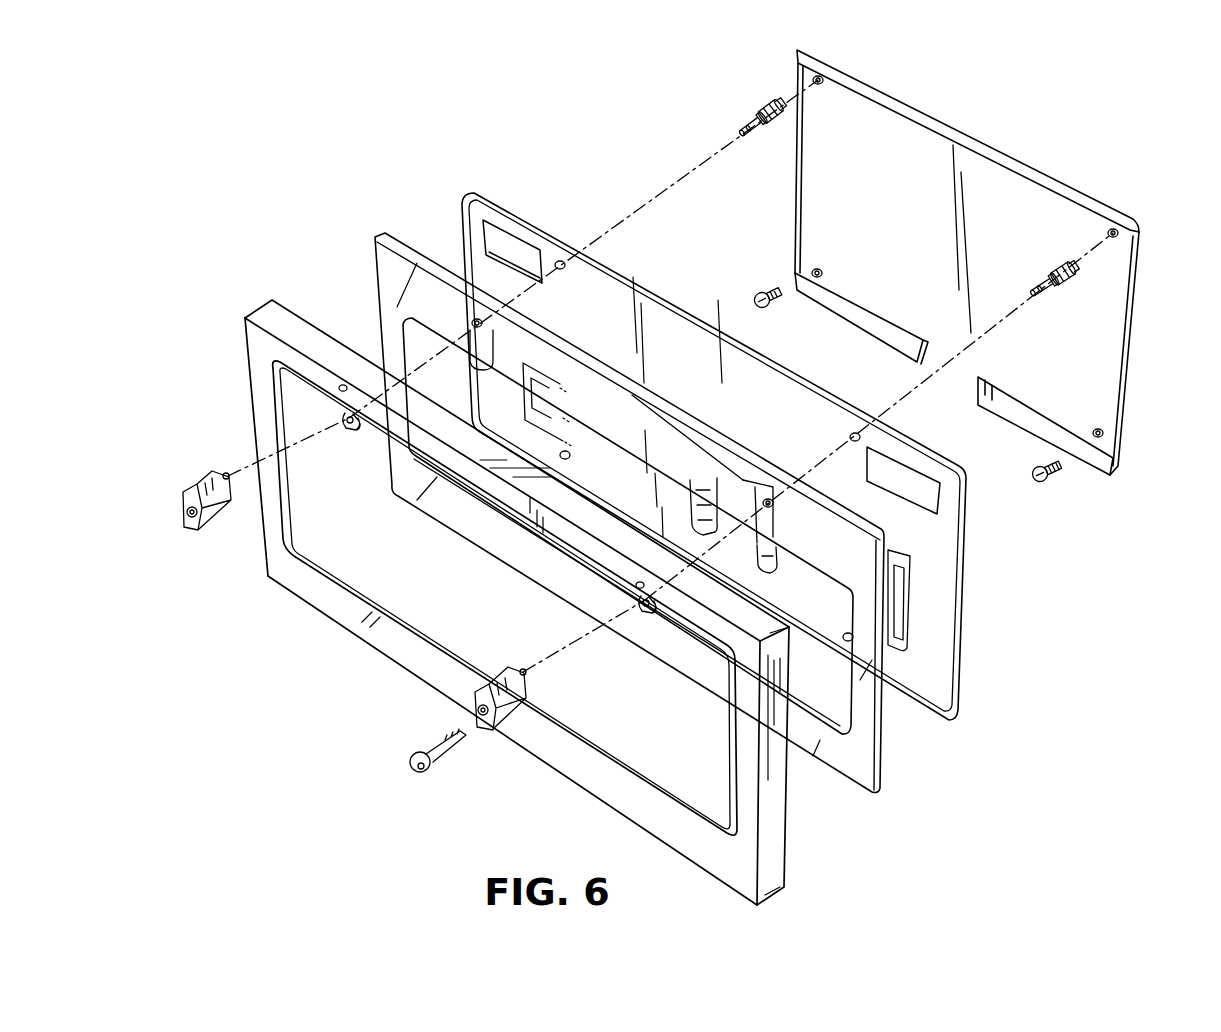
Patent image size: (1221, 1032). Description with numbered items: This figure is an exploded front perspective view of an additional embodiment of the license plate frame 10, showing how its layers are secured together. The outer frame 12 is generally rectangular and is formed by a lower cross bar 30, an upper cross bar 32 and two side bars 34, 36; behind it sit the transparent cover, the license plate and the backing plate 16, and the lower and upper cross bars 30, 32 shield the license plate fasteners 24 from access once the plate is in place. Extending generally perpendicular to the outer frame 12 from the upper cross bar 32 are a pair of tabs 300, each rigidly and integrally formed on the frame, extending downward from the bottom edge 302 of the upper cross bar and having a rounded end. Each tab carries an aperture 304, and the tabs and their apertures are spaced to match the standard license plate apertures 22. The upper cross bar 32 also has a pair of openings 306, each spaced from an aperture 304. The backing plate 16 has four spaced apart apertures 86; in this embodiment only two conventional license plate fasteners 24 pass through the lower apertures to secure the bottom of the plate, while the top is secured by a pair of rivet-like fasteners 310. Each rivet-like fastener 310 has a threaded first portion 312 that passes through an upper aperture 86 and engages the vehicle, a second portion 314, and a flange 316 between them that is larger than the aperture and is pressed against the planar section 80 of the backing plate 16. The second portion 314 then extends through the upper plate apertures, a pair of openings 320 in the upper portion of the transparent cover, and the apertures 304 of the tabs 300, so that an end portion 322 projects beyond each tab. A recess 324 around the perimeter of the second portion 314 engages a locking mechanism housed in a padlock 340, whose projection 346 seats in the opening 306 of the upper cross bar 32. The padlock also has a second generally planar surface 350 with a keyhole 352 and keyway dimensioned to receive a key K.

The license plate frame 10 is at (651, 469).
The outer frame 12 is at (497, 602).
The backing plate 16 is at (1132, 341).
The license plate apertures 22 is at (560, 260).
The license plate fasteners 24 is at (755, 295).
The lower cross bar 30 is at (373, 632).
The upper cross bar 32 is at (300, 363).
The side bar 34 is at (765, 760).
The side bar 36 is at (263, 405).
The planar section 80 is at (1008, 262).
The apertures 86 is at (822, 85).
The tabs 300 is at (345, 425).
The bottom edge 302 is at (490, 498).
The aperture 304 is at (353, 427).
The openings 306 is at (343, 385).
The rivet-like fasteners 310 is at (909, 202).
The threaded first portion 312 is at (768, 108).
The second portion 314 is at (758, 130).
The flange 316 is at (775, 125).
The openings 320 is at (475, 320).
The end portion 322 is at (742, 135).
The recess 324 is at (752, 118).
The padlock 340 is at (319, 612).
The projection 346 is at (226, 473).
The second generally planar surface 350 is at (190, 531).
The keyhole 352 is at (187, 513).
The key K is at (417, 777).